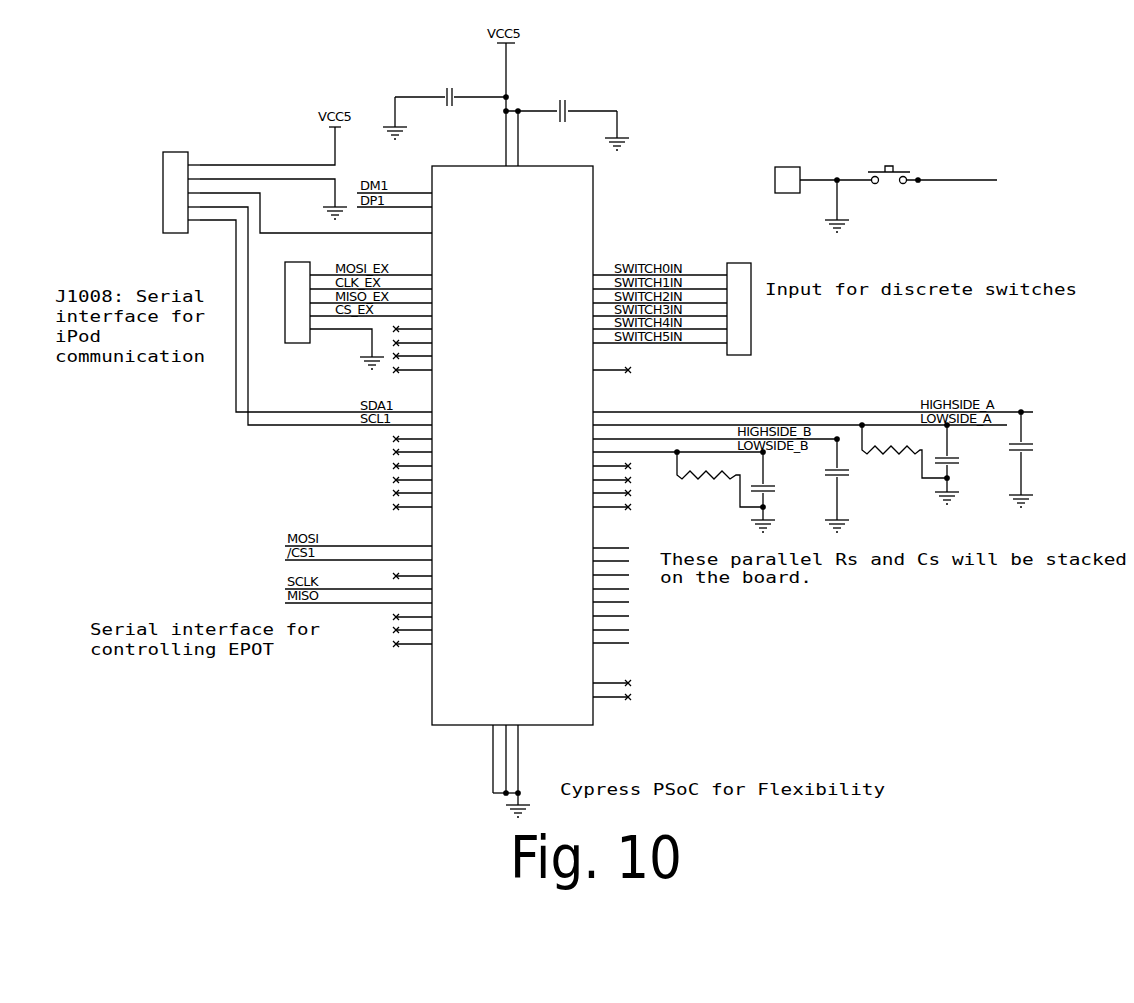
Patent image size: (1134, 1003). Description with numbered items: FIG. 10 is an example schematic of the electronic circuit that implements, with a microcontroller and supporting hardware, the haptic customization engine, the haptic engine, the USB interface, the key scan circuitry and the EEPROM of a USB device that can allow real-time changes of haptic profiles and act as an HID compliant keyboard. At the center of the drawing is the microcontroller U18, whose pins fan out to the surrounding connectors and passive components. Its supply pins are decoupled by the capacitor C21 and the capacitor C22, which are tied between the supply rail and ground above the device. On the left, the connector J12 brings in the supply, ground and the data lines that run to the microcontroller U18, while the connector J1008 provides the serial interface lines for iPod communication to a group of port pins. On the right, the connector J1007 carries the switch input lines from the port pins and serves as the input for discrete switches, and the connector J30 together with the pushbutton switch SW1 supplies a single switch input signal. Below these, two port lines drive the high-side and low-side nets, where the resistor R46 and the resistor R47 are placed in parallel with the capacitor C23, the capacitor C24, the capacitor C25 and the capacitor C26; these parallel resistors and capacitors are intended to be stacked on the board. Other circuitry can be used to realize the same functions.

The 5-pin connector CON5 SIP/TM/L.500/5 J12 is at (192, 203).
The iPod serial interface connector CON5 J1008 is at (327, 312).
The discrete switch input connector CON5 SIP/TM/L.600/6 J1007 is at (762, 319).
The connector CON1 J30 is at (819, 189).
The pushbutton switch SW_TACT_3MM_SMT SW1 is at (948, 204).
The Cypress PSoC CY8C24894-QFN56 microcontroller U18 is at (521, 481).
The 0.27u decoupling capacitor SM/C_0805 C21 is at (445, 103).
The 0.27u decoupling capacitor SM/C_0805 C22 is at (566, 117).
The 10n capacitor SM/C_0805 C23 is at (979, 463).
The 10n capacitor SM/C_0805 C24 is at (1056, 458).
The 10n capacitor SM/C_0805 C25 is at (794, 491).
The 10n capacitor SM/C_0805 C26 is at (870, 484).
The 5.1k resistor SM/R_0805 R46 is at (903, 450).
The 5.1k resistor SM/R_0805 R47 is at (719, 478).